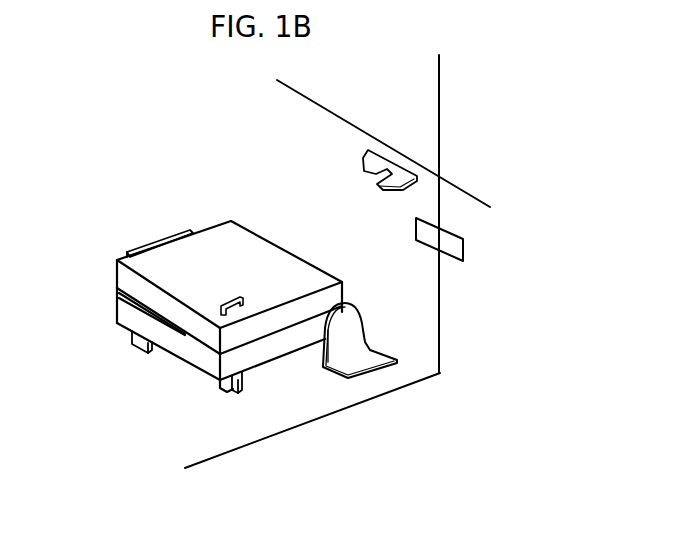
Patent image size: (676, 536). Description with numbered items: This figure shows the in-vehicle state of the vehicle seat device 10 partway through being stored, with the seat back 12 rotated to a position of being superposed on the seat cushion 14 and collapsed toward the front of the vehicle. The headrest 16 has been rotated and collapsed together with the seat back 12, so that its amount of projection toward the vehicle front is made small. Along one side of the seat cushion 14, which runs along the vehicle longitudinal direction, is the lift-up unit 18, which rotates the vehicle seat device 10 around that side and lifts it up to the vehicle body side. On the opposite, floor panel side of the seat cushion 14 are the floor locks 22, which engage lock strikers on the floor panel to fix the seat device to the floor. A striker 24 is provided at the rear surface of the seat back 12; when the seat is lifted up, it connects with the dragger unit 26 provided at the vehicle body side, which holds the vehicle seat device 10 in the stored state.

The vehicle seat device 10 is at (142, 176).
The seat back 12 is at (260, 238).
The seat cushion 14 is at (132, 317).
The headrest 16 is at (140, 245).
The lift-up unit 18 is at (352, 325).
The floor locks 22 is at (143, 350).
The striker 24 is at (237, 297).
The dragger unit 26 is at (397, 168).